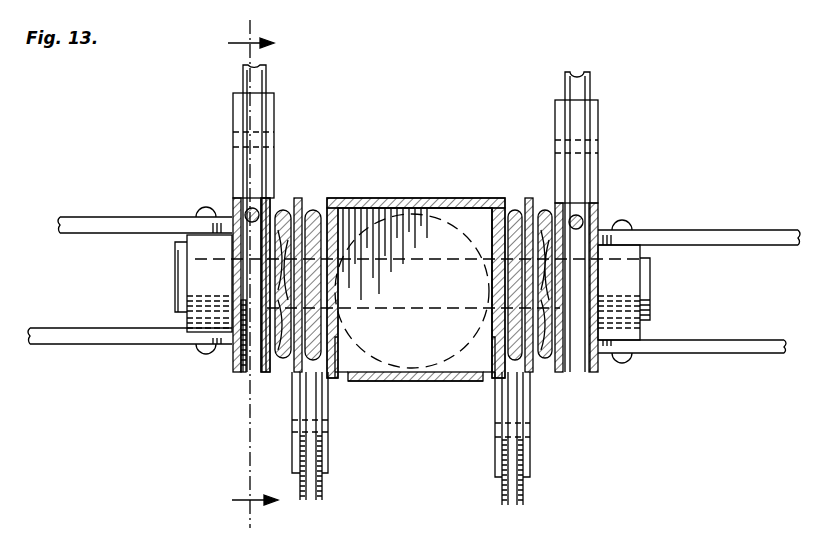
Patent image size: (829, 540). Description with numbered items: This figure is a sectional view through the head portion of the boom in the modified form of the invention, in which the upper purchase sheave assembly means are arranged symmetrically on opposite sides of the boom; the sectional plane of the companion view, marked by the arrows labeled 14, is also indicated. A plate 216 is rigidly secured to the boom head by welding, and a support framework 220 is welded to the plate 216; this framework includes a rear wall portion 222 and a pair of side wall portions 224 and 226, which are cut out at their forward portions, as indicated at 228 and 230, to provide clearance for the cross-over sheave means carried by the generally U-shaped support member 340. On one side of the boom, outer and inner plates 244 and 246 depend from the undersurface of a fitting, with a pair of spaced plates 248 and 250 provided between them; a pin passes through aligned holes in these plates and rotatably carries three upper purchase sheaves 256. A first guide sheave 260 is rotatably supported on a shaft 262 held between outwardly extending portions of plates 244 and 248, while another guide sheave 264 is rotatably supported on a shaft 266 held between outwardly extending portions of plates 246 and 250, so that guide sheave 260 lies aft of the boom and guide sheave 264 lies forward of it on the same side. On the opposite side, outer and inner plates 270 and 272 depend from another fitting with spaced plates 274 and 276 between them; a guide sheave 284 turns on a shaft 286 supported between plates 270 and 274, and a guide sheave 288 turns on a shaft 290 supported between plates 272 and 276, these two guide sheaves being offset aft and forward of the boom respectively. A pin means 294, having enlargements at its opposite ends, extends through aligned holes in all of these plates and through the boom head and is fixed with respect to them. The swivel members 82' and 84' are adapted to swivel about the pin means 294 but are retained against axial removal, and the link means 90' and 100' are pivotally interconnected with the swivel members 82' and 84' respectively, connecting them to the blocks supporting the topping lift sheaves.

The section line 14- 14 is at (270, 271).
The swivel member 82' is at (175, 283).
The link means 90' is at (130, 355).
The link means 100' is at (692, 364).
The swivel member 84' is at (645, 292).
The plate 216 is at (455, 249).
The support framework 220 is at (468, 198).
The rear wall portion 222 is at (398, 198).
The side wall portion 224 is at (348, 319).
The side wall portion 226 is at (490, 276).
The cutout 228 is at (332, 376).
The cutout 230 is at (492, 376).
The outer plate 244 is at (233, 362).
The inner plate 246 is at (318, 402).
The spaced plate 248 is at (280, 372).
The spaced plate 250 is at (296, 372).
The upper purchase sheaves 256 is at (264, 372).
The first guide sheave 260 is at (272, 80).
The shaft 262 is at (268, 136).
The guide sheave 264 is at (330, 497).
The shaft 266 is at (320, 434).
The outer plate 270 is at (594, 370).
The inner plate 272 is at (458, 372).
The spaced plate 274 is at (546, 372).
The spaced plate 276 is at (532, 376).
The guide sheave 284 is at (592, 86).
The shaft 286 is at (592, 146).
The guide sheave 288 is at (530, 504).
The shaft 290 is at (530, 446).
The pin means 294 is at (652, 303).
The support member 340 is at (384, 382).